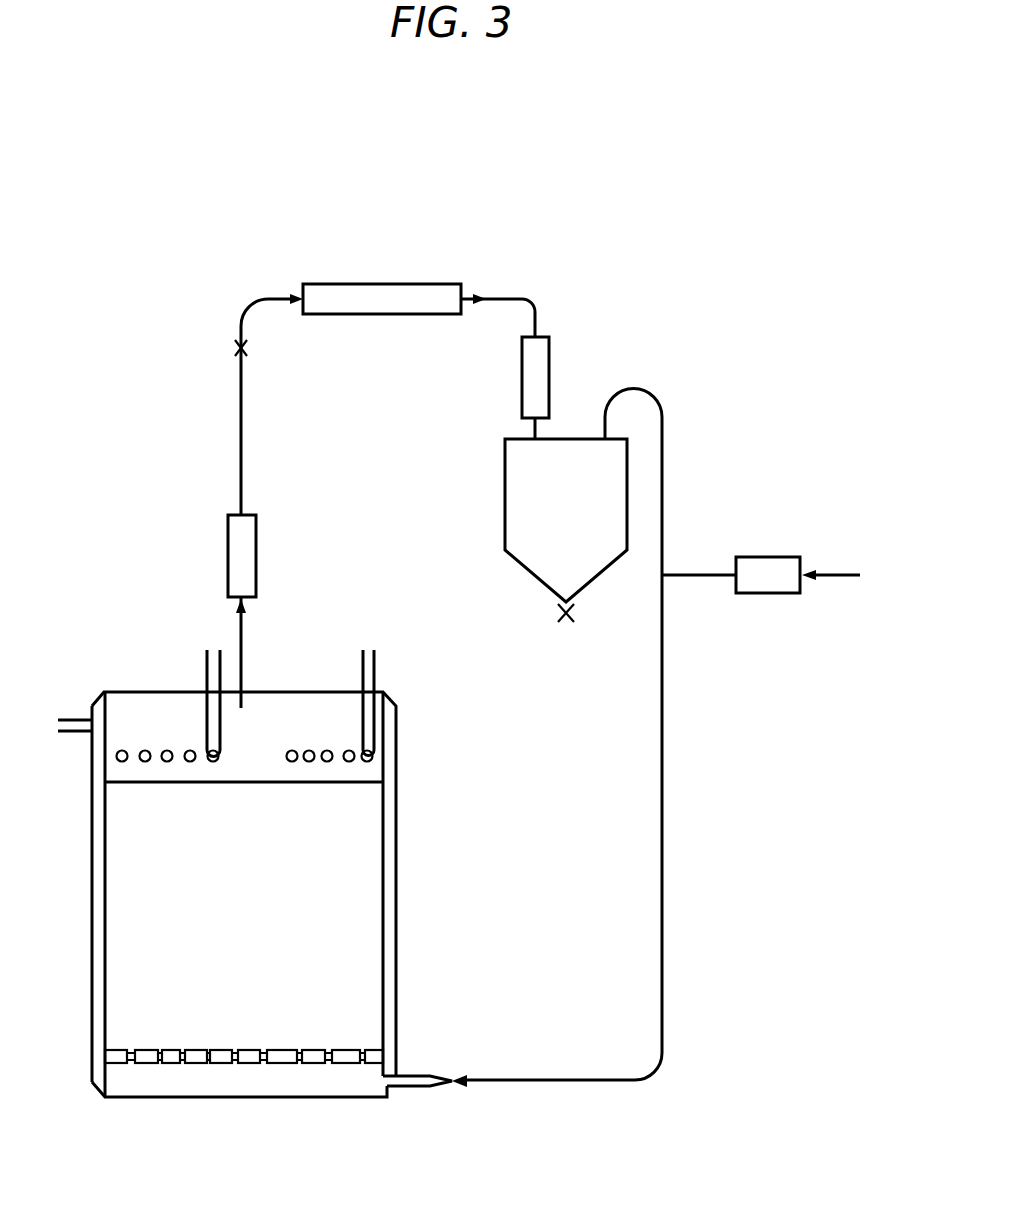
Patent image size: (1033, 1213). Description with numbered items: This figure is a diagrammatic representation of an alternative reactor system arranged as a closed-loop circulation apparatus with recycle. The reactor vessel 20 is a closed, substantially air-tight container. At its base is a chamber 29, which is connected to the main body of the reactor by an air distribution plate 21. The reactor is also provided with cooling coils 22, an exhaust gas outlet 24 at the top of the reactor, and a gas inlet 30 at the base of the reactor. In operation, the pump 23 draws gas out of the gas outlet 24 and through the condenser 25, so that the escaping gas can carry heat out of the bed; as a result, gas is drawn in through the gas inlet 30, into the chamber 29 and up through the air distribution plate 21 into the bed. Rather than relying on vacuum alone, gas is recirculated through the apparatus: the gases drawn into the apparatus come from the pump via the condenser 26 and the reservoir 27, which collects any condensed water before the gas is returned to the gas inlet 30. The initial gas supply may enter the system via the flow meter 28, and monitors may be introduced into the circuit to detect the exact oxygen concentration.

The reactor vessel 20 is at (228, 932).
The air distribution plate 21 is at (345, 1050).
The cooling coils 22 is at (373, 755).
The pump 23 is at (370, 284).
The gas outlet 24 is at (240, 637).
The condenser 25 is at (227, 576).
The condenser 26 is at (549, 375).
The reservoir 27 is at (551, 523).
The flow meter 28 is at (765, 557).
The chamber 29 is at (228, 1094).
The gas inlet 30 is at (405, 1086).